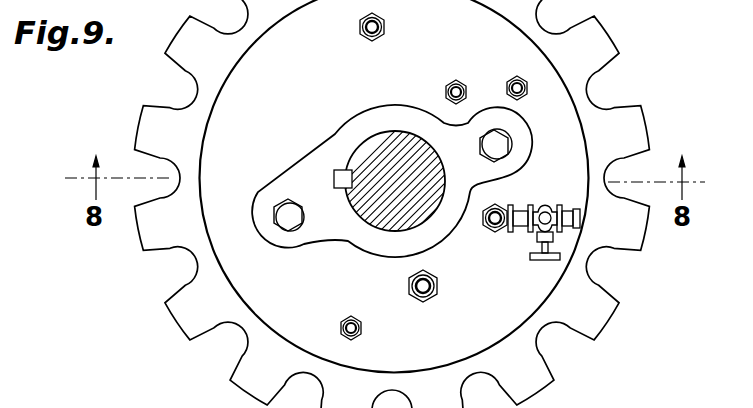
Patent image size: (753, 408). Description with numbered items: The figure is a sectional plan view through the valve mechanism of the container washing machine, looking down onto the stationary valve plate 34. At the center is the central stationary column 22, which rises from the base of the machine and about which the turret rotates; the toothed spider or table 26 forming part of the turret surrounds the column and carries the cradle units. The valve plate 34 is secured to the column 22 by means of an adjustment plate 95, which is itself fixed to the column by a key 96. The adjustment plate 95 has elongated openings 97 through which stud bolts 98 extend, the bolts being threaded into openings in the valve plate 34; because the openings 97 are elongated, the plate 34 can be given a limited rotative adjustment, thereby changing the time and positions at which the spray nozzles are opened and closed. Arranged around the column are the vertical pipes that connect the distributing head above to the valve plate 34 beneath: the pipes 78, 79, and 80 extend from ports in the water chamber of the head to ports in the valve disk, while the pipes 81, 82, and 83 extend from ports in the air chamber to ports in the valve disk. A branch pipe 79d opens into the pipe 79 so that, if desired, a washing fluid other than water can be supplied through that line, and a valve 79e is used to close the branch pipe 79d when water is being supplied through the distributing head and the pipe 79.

The central stationary column 22 is at (379, 134).
The spider or table 26 is at (636, 252).
The stationary valve plate 34 is at (502, 285).
The pipe 78 is at (445, 92).
The pipe 79 is at (553, 220).
The branch pipe 79d is at (579, 218).
The valve 79e is at (545, 209).
The pipe 80 is at (436, 273).
The pipe 81 is at (362, 323).
The pipe 82 is at (359, 27).
The pipe 83 is at (523, 67).
The adjustment plate 95 is at (334, 148).
The key 96 is at (334, 176).
The elongated openings 97 is at (512, 161).
The stud bolts 98 is at (500, 141).